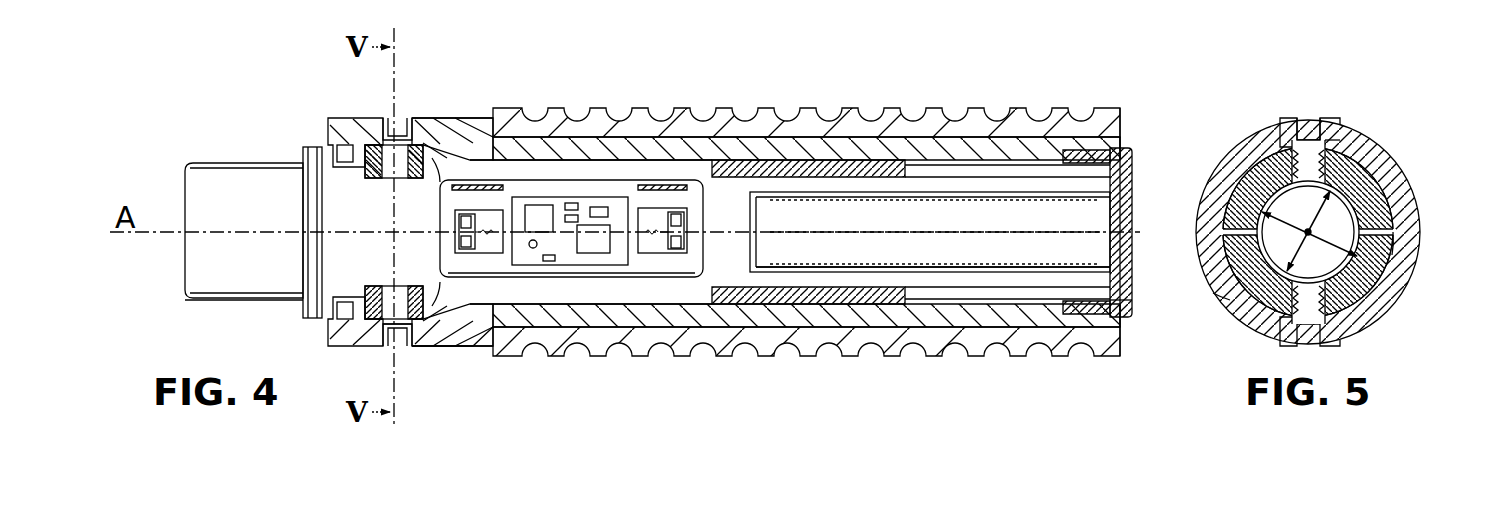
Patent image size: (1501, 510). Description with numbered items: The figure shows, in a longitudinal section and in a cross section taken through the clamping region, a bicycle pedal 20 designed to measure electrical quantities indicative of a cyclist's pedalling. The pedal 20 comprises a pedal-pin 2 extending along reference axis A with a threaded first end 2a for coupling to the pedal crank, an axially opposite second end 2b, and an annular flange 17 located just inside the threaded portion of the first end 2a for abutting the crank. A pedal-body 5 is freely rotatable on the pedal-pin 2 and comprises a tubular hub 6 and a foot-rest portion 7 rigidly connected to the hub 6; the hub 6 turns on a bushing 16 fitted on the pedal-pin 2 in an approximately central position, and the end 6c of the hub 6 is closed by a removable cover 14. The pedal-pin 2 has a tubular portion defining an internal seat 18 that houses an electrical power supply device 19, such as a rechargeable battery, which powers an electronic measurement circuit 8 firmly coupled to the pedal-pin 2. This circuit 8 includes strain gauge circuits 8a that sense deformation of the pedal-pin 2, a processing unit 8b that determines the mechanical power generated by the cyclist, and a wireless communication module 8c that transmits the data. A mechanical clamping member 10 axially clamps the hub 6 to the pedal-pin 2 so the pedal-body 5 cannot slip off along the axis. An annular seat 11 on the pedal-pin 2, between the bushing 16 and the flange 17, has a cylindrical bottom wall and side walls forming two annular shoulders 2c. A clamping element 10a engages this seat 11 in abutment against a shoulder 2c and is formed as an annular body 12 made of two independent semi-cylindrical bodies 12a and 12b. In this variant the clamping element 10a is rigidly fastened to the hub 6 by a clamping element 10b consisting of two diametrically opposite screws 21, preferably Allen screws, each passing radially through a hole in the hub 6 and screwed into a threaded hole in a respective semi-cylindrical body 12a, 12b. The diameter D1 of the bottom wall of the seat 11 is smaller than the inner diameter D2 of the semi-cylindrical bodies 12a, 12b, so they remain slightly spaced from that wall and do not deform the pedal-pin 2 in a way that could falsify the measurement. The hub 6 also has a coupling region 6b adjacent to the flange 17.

In FIG. 4, the pedal-pin 2 is at (745, 210).
In FIG. 4, the first end 2a is at (233, 158).
In FIG. 4, the second end 2b is at (1112, 174).
In FIG. 4, the annular shoulders 2c is at (373, 155).
In FIG. 4, the pedal-body 5 is at (1122, 106).
In FIG. 4, the hub 6 is at (870, 148).
In FIG. 5, the hub 6 is at (1418, 226).
In FIG. 4, the housing coupling part 6b is at (326, 137).
In FIG. 4, the end of the hub 6c is at (1126, 134).
In FIG. 4, the foot-rest portion 7 is at (976, 118).
In FIG. 4, the electronic measurement circuit 8 is at (575, 183).
In FIG. 4, the electrical strain gauge circuits 8a is at (477, 254).
In FIG. 4, the processing unit 8b is at (536, 250).
In FIG. 4, the communication module 8c is at (596, 262).
In FIG. 4, the mechanical clamping member 10 is at (436, 99).
In FIG. 4, the clamping element 10a is at (440, 344).
In FIG. 5, the clamping element 10a is at (1393, 255).
In FIG. 4, the clamping element 10b is at (382, 358).
In FIG. 5, the clamping element 10b is at (1320, 108).
In FIG. 4, the annular seat 11 is at (367, 171).
In FIG. 5, the annular seat 11 is at (1358, 204).
In FIG. 5, the annular body 12 is at (1378, 176).
In FIG. 5, the semi-cylindrical body 12a is at (1337, 142).
In FIG. 5, the semi-cylindrical body 12b is at (1215, 293).
In FIG. 4, the cover 14 is at (1131, 298).
In FIG. 4, the bushing 16 is at (786, 172).
In FIG. 4, the flange 17 is at (300, 308).
In FIG. 4, the seat 18 is at (946, 263).
In FIG. 4, the electrical power supply device 19 is at (858, 245).
In FIG. 4, the pedal 20 is at (157, 313).
In FIG. 4, the screws 21 is at (410, 346).
In FIG. 5, the screws 21 is at (1310, 150).
In FIG. 5, the diameter of the cylindrical bottom wall D1 is at (1348, 262).
In FIG. 5, the diameter of the inner semi-circular wall D2 is at (1292, 213).